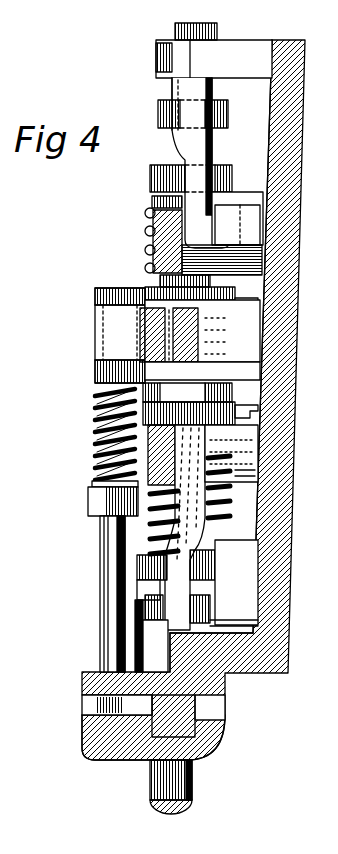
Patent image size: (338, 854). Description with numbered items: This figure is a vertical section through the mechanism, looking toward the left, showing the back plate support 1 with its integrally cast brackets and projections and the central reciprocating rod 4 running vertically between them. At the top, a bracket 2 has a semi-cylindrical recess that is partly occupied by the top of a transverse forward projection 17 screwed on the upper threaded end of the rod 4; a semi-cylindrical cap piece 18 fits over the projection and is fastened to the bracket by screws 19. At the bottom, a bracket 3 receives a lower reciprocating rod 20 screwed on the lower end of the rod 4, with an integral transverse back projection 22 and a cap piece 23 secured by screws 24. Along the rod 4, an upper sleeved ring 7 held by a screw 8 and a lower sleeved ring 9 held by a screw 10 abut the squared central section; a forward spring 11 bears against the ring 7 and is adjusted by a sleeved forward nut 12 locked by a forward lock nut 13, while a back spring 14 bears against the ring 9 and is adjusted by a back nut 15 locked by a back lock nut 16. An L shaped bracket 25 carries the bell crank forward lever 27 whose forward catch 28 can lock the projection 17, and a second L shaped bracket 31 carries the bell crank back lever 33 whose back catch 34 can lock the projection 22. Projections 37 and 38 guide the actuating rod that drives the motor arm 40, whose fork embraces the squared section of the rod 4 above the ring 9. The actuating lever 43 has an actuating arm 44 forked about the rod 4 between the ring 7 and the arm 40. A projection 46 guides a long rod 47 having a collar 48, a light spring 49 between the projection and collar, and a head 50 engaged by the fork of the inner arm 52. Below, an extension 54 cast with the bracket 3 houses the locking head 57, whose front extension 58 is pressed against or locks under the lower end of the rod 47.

The back plate support 1 is at (207, 400).
The bracket 2 is at (238, 50).
The bracket 3 is at (237, 667).
The central reciprocating rod 4 is at (100, 420).
The upper sleeved ring 7 is at (243, 266).
The screw 8 is at (235, 298).
The lower sleeved ring 9 is at (262, 398).
The screw 10 is at (258, 412).
The forward spring 11 is at (158, 210).
The upper sleeved forward nut 12 is at (158, 183).
The forward lock nut 13 is at (156, 172).
The back spring 14 is at (178, 532).
The lower sleeved back nut 15 is at (165, 565).
The back lock nut 16 is at (175, 580).
The transverse forward projection 17 is at (163, 115).
The semi-cylindrical cap piece 18 is at (176, 72).
The screws 19 is at (157, 50).
The lower reciprocating rod 20 is at (155, 778).
The transverse back projection 22 is at (150, 608).
The semi-cylindrical cap piece 23 is at (165, 668).
The screws 24 is at (140, 640).
The L shaped bracket 25 is at (150, 238).
The bell crank forward lever 27 is at (291, 336).
The forward catch 28 is at (216, 88).
The L shaped bracket 31 is at (95, 462).
The bell crank back lever 33 is at (233, 486).
The back catch 34 is at (215, 620).
The projection 37 is at (237, 216).
The projection 38 is at (237, 590).
The motor arm 40 is at (290, 372).
The centrally pivoted actuating lever 43 is at (245, 331).
The actuating arm 44 is at (266, 352).
The projection 46 is at (105, 372).
The rod 47 is at (108, 532).
The collar 48 is at (105, 500).
The spring 49 is at (100, 477).
The head 50 is at (118, 295).
The inner arm 52 is at (120, 322).
The extension 54 is at (90, 752).
The head 57 is at (180, 725).
The extension 58 is at (98, 703).